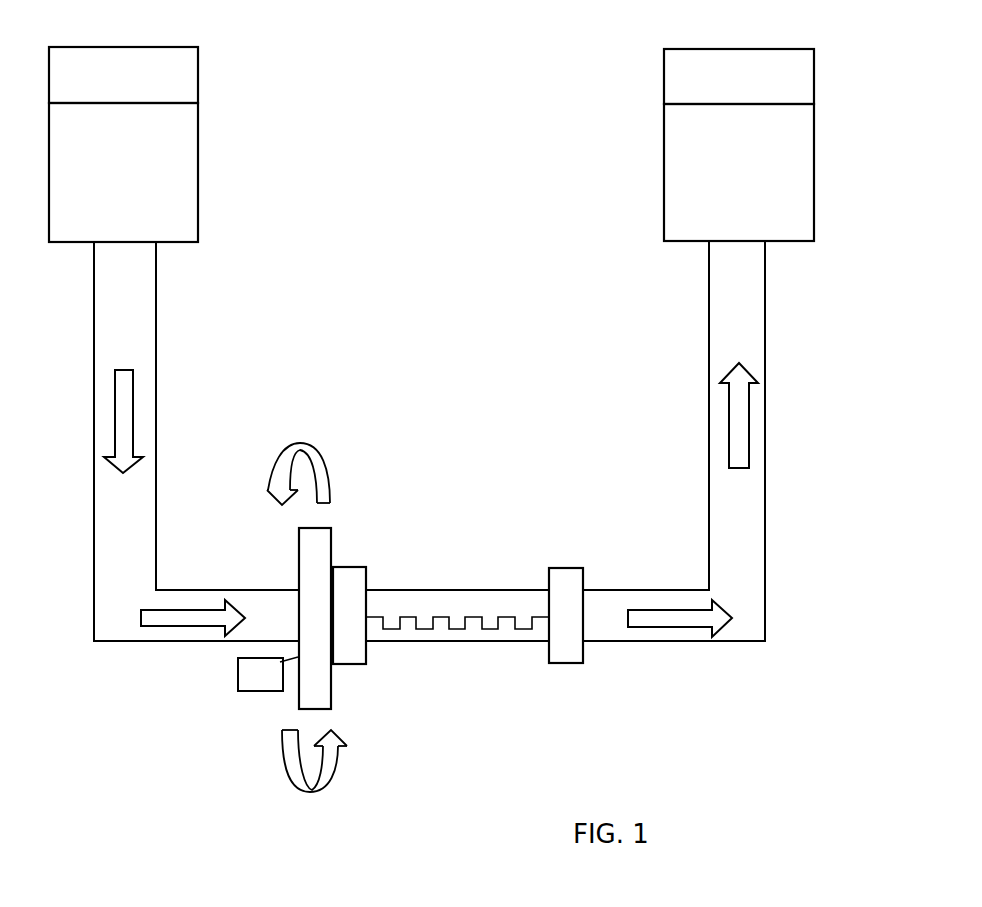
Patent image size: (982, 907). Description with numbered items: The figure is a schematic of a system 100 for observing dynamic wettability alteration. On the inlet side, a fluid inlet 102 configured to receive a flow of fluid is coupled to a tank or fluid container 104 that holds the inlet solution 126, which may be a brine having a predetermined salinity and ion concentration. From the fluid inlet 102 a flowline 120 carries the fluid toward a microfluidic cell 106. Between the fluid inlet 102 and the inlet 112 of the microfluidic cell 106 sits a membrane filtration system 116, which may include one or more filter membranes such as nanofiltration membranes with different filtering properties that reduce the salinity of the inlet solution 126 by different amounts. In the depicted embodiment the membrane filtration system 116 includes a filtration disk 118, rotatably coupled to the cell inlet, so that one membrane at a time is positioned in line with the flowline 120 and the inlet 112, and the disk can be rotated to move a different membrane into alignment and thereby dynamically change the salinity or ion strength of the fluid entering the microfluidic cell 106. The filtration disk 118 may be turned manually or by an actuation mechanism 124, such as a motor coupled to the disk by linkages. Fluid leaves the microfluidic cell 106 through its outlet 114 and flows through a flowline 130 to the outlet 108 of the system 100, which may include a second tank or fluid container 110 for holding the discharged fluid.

The system 100 is at (449, 133).
The fluid inlet 102 is at (199, 72).
The fluid container 104 is at (199, 161).
The microfluidic cell 106 is at (466, 580).
The outlet 108 is at (790, 59).
The fluid container 110 is at (790, 180).
The inlet 112 is at (359, 626).
The outlet 114 is at (564, 630).
The membrane filtration system 116 is at (363, 500).
The filtration disk 118 is at (304, 554).
The flowline 120 is at (145, 316).
The actuation mechanism 124 is at (247, 682).
The inlet solution 126 is at (146, 187).
The flowline 130 is at (717, 342).